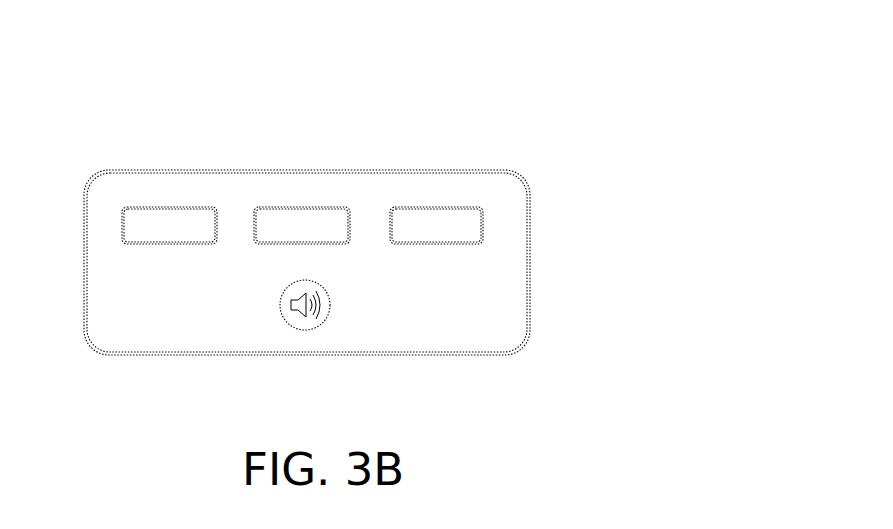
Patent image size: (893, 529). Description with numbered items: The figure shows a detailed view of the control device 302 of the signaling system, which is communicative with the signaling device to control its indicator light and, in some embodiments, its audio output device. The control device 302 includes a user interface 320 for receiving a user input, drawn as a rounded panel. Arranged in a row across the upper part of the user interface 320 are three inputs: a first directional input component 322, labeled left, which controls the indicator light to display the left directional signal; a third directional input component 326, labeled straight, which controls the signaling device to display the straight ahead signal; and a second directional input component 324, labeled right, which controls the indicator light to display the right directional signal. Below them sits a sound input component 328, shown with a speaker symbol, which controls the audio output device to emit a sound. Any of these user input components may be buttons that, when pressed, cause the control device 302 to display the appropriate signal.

The control device 302 is at (661, 115).
The user interface 320 is at (220, 187).
The first directional input component 322 is at (132, 207).
The second directional input component 324 is at (460, 207).
The third directional input component 326 is at (311, 206).
The sound input component 328 is at (305, 330).